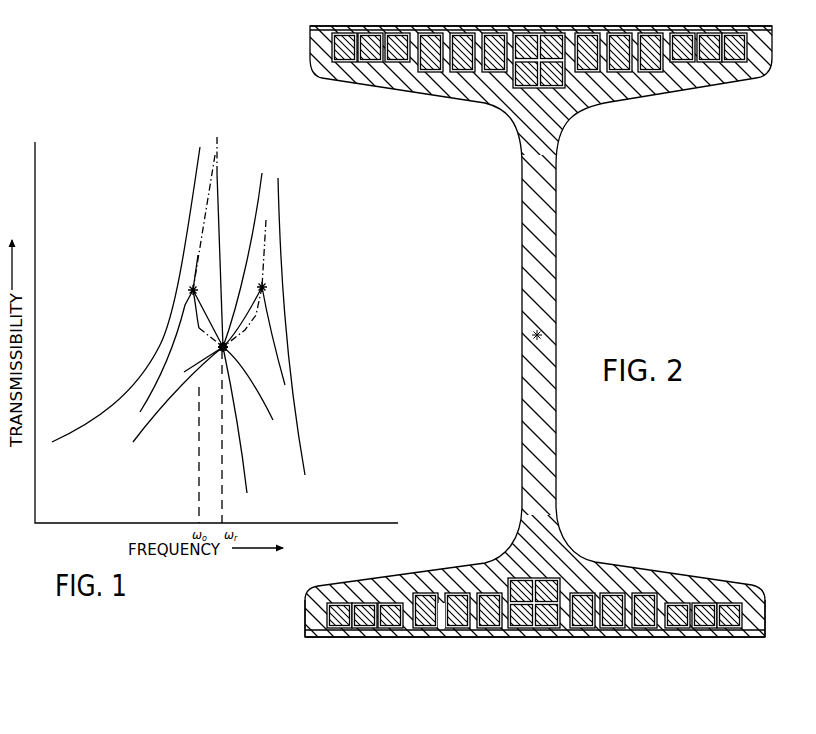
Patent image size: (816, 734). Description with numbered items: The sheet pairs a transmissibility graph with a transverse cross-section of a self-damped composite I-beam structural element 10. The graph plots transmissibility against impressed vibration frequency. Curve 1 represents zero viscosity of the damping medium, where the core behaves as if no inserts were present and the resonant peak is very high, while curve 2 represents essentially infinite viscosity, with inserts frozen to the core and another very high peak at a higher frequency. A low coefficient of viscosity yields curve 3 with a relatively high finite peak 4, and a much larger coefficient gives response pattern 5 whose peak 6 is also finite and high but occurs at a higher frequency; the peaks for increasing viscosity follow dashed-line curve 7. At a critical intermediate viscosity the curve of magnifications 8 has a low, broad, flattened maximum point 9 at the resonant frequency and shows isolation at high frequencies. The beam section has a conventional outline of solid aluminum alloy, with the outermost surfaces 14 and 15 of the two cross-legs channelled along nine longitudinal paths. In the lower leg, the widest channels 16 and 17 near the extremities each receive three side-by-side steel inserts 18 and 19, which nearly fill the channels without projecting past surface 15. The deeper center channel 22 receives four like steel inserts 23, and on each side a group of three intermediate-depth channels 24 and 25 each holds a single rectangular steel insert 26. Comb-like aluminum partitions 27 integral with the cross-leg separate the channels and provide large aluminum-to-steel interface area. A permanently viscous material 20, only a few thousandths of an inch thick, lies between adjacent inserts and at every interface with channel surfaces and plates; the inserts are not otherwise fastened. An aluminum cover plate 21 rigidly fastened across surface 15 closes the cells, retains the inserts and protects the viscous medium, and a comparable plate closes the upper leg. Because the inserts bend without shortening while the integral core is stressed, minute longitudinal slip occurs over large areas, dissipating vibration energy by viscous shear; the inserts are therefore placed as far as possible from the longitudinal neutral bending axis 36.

In FIG. 1, the response curve for zero viscosity 1 is at (217, 174).
In FIG. 1, the response curve for infinite viscosity 2 is at (252, 243).
In FIG. 1, the response curve for low viscosity 3 is at (178, 330).
In FIG. 1, the peak value of low-viscosity curve 4 is at (190, 290).
In FIG. 1, the response pattern for large viscosity 5 is at (274, 326).
In FIG. 1, the peak of large-viscosity response pattern 6 is at (266, 288).
In FIG. 1, the dashed-line curve of peak values 7 is at (197, 320).
In FIG. 1, the optimized response curve 8 is at (253, 373).
In FIG. 1, the maximum point of optimized curve 9 is at (229, 347).
In FIG. 2, the I-beam structural element 10 is at (540, 332).
In FIG. 2, the outermost surface of upper cross-leg 14 is at (316, 40).
In FIG. 2, the outermost surface of lower cross-leg 15 is at (320, 637).
In FIG. 2, the widest channel 16 is at (321, 615).
In FIG. 2, the widest channel 17 is at (745, 623).
In FIG. 2, the steel inserts 18 is at (357, 621).
In FIG. 2, the steel inserts 19 is at (707, 629).
In FIG. 2, the permanently viscous material 20 is at (378, 599).
In FIG. 2, the end or cover plate 21 is at (730, 633).
In FIG. 2, the center channel 22 is at (502, 634).
In FIG. 2, the steel inserts 23 is at (540, 601).
In FIG. 2, the channels of intermediate depth 24 is at (467, 634).
In FIG. 2, the channels of intermediate depth 25 is at (636, 634).
In FIG. 2, the rectangular steel insert 26 is at (433, 592).
In FIG. 2, the aluminum partitions 27 is at (412, 620).
In FIG. 2, the longitudinal neutral bending axis 36 is at (540, 333).